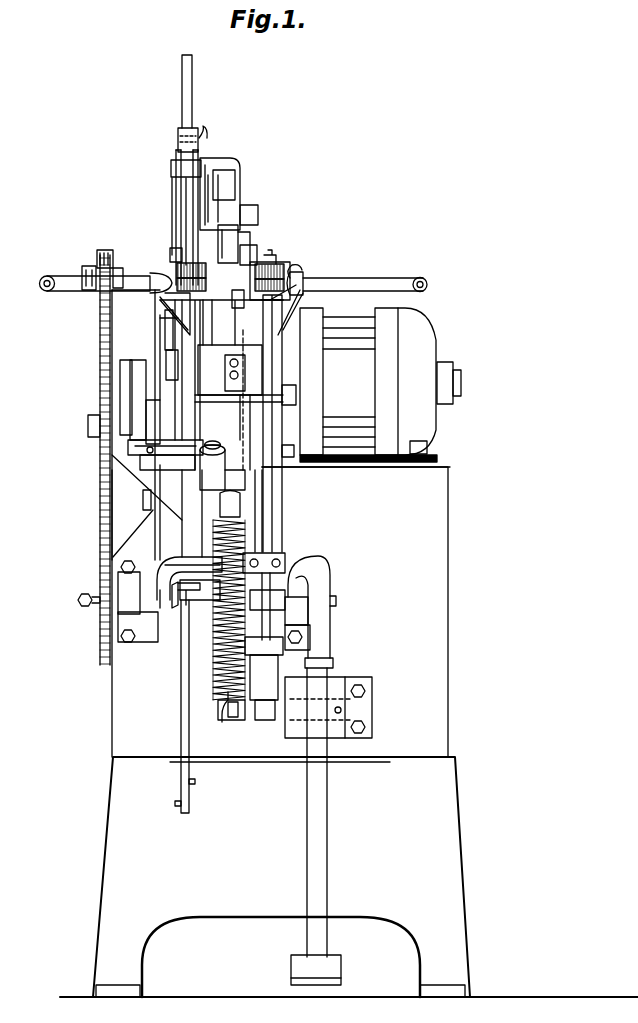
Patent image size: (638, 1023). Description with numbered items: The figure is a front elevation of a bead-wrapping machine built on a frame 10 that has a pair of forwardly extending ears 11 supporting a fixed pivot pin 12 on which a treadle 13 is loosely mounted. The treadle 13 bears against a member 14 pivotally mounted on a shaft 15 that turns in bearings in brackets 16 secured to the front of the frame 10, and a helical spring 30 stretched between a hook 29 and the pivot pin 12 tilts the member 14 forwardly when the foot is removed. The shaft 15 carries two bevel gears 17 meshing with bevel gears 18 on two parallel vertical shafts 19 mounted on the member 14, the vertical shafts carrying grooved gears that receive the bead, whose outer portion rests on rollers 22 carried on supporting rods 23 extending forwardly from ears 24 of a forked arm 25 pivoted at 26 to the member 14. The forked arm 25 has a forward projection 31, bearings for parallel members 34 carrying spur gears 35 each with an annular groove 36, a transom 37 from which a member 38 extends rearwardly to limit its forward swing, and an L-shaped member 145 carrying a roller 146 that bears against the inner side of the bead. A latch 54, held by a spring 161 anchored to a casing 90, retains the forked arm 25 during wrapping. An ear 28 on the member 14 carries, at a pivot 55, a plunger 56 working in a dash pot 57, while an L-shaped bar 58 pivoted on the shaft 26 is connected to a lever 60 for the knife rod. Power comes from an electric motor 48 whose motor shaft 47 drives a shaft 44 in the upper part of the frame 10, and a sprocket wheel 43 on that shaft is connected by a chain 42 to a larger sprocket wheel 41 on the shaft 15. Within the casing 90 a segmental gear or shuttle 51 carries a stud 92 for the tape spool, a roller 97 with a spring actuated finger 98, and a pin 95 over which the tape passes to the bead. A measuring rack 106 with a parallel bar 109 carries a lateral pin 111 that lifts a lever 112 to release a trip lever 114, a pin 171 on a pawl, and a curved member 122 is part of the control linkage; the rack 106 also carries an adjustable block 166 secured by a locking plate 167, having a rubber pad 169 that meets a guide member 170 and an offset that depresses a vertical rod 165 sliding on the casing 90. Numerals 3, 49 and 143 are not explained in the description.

The frame 3 is at (268, 248).
The frame 10 is at (112, 857).
The ears 11 is at (372, 710).
The pivot pin 12 is at (225, 722).
The treadle 13 is at (320, 865).
The member 14 is at (294, 398).
The shaft 15 is at (76, 601).
The brackets 16 is at (125, 595).
The bevel gears 17 is at (172, 618).
The bevel gears 18 is at (160, 568).
The vertical shafts 19 is at (182, 520).
The rollers 22 is at (62, 280).
The supporting rods 23 is at (40, 290).
The ears 24 is at (165, 278).
The forked arm 25 is at (282, 372).
The pivot 26 is at (140, 466).
The ear 28 is at (320, 560).
The hook 29 is at (245, 504).
The helical spring 30 is at (216, 672).
The forward projection 31 is at (226, 478).
The parallel members 34 is at (281, 298).
The spur gears 35 is at (178, 265).
The annular groove 36 is at (300, 266).
The transom 37 is at (246, 358).
The member 38 is at (226, 378).
The sprocket wheel 41 is at (98, 640).
The chain 42 is at (100, 514).
The sprocket wheel 43 is at (96, 252).
The shaft 44 is at (80, 260).
The motor shaft 47 is at (461, 384).
The electric motor 48 is at (418, 337).
The stop 49 is at (90, 424).
The segmental gear or shuttle 51 is at (228, 237).
The latch 54 is at (155, 415).
The pivot 55 is at (285, 565).
The plunger 56 is at (300, 610).
The dash pot 57 is at (290, 660).
The L-shaped bar 58 is at (130, 448).
The lever 60 is at (170, 510).
The casing 90 is at (222, 187).
The stud 92 is at (258, 213).
The pin 95 is at (243, 299).
The roller 97 is at (252, 238).
The spring actuated finger 98 is at (258, 252).
The measuring rack 106 is at (192, 82).
The parallel bar 109 is at (176, 153).
The lateral pin 111 is at (175, 806).
The lever 112 is at (135, 486).
The trip lever 114 is at (131, 501).
The curved member 122 is at (150, 328).
The plate 143 is at (166, 345).
The L-shaped member 145 is at (208, 330).
The roller 146 is at (176, 250).
The spring 161 is at (165, 318).
The vertical rod 165 is at (202, 192).
The block 166 is at (192, 128).
The locking plate 167 is at (208, 134).
The rubber pad 169 is at (178, 167).
The guide member 170 is at (186, 190).
The pin 171 is at (172, 202).